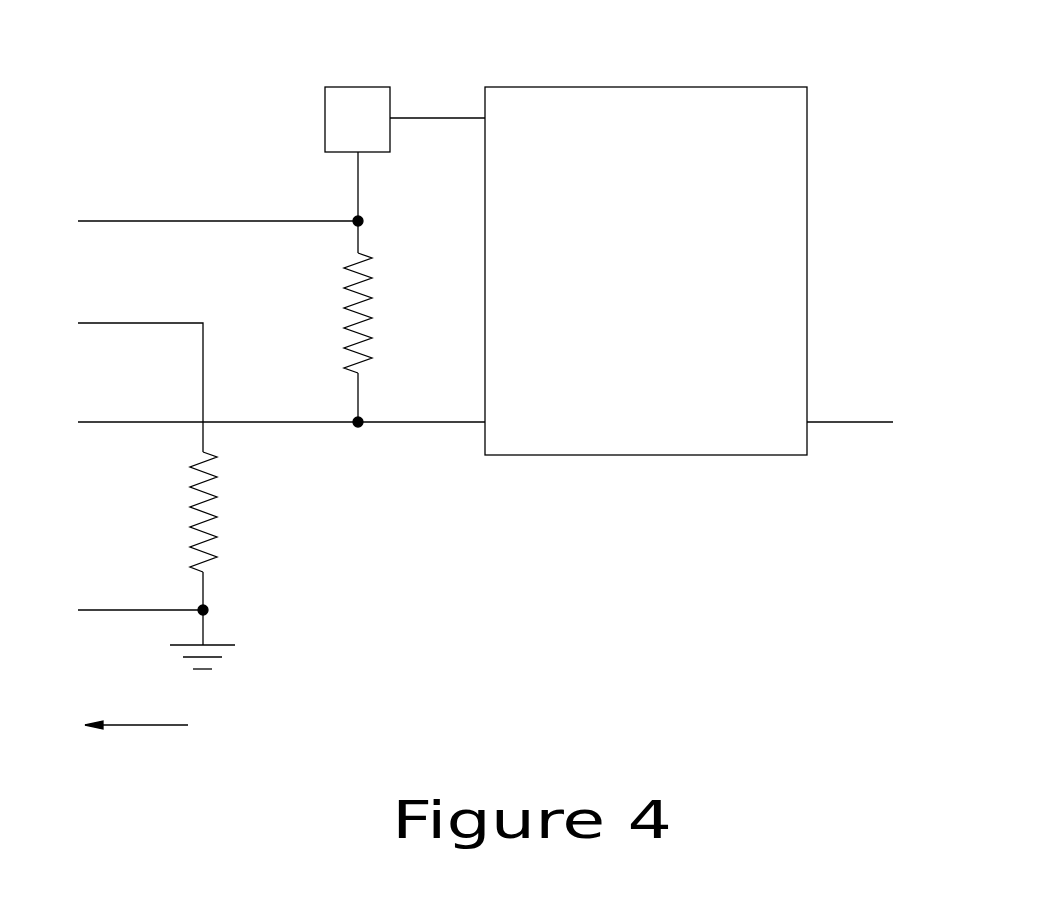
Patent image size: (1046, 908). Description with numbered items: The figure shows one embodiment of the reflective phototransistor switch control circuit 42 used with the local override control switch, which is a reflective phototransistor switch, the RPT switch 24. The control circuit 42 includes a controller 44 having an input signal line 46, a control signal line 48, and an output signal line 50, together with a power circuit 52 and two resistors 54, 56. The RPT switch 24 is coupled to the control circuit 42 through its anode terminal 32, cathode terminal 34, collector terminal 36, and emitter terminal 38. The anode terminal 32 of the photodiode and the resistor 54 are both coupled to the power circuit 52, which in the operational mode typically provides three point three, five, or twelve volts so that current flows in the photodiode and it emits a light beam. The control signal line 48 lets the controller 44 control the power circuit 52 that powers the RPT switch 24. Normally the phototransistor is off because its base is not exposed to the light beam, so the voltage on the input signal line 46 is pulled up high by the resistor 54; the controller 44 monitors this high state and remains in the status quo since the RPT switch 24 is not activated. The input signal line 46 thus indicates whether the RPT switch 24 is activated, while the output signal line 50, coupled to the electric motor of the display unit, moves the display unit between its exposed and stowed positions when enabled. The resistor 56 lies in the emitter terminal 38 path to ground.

The reflective phototransistor switch 24 is at (275, 726).
The anode terminal 32 is at (220, 201).
The cathode terminal 34 is at (140, 366).
The collector terminal 36 is at (220, 404).
The emitter terminal 38 is at (156, 621).
The control circuit 42 is at (167, 86).
The controller 44 is at (650, 227).
The input signal line 46 is at (432, 480).
The control signal line 48 is at (461, 69).
The output signal line 50 is at (871, 378).
The power circuit 52 is at (380, 126).
The resistor 54 is at (299, 337).
The resistor 56 is at (271, 531).